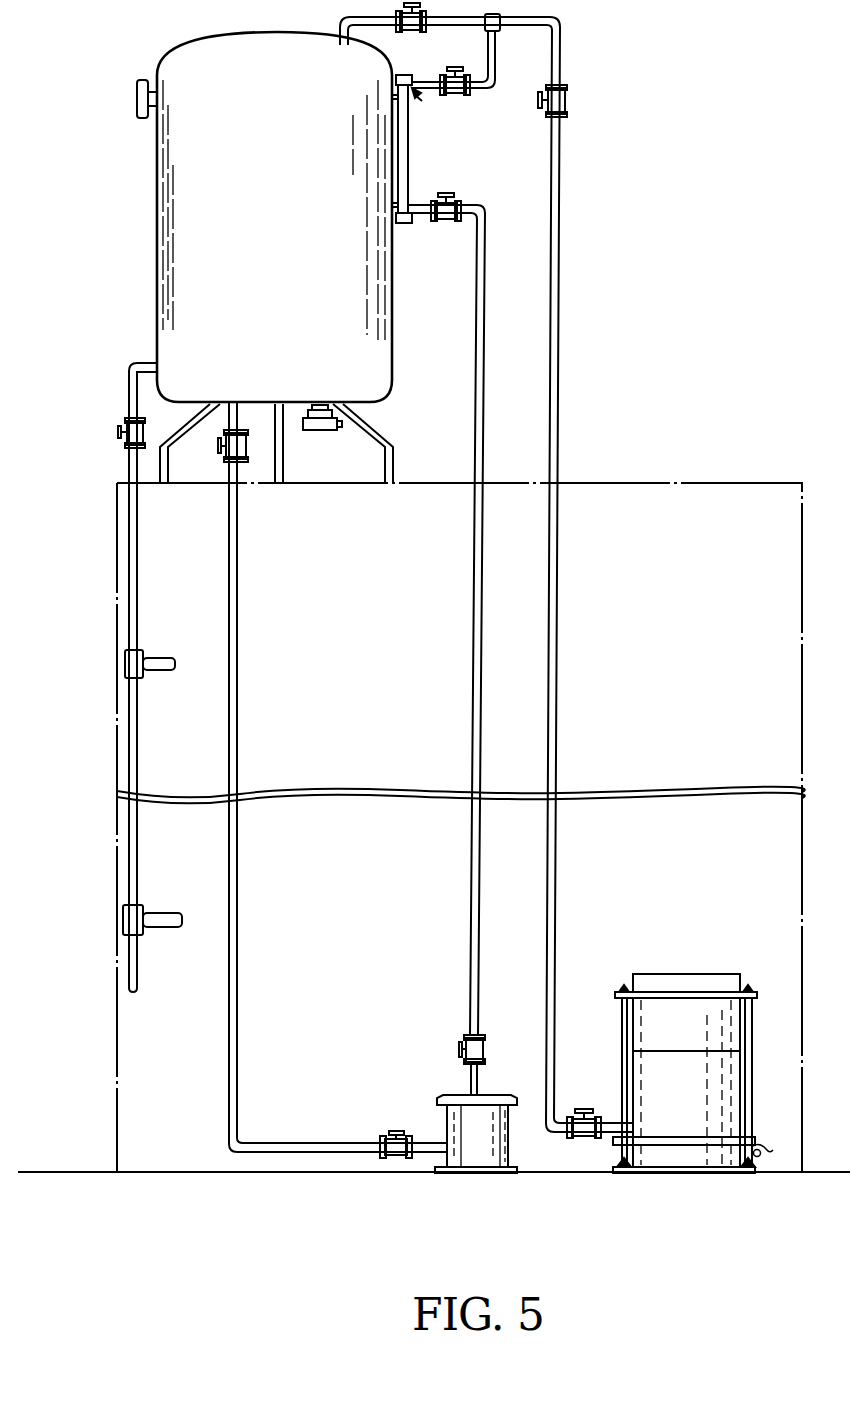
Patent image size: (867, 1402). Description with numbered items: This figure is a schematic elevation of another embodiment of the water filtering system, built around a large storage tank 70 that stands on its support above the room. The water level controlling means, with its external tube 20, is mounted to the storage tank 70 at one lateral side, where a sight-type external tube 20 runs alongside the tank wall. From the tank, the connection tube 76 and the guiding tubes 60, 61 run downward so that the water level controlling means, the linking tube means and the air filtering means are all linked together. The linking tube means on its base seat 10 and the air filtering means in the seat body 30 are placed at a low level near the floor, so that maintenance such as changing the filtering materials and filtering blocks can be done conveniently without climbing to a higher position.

The base seat 10 is at (425, 1075).
The external tube 20 is at (408, 167).
The seat body 30 is at (703, 938).
The guiding tube 60 is at (486, 90).
The guiding tube 61 is at (562, 238).
The storage tank 70 is at (241, 257).
The connection tube 76 is at (238, 638).